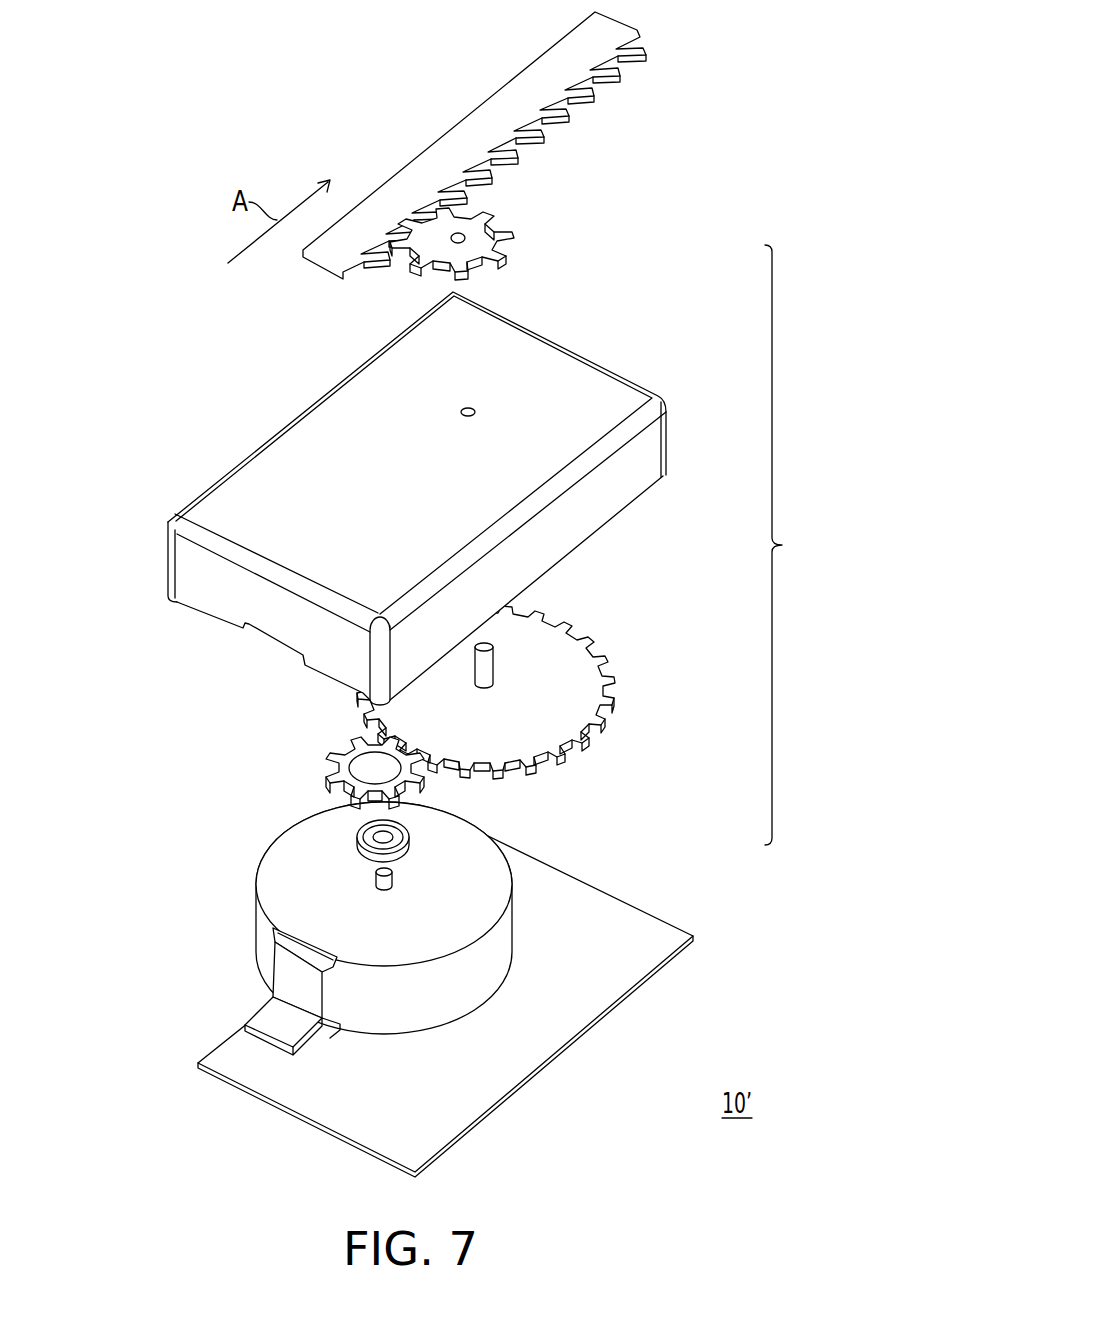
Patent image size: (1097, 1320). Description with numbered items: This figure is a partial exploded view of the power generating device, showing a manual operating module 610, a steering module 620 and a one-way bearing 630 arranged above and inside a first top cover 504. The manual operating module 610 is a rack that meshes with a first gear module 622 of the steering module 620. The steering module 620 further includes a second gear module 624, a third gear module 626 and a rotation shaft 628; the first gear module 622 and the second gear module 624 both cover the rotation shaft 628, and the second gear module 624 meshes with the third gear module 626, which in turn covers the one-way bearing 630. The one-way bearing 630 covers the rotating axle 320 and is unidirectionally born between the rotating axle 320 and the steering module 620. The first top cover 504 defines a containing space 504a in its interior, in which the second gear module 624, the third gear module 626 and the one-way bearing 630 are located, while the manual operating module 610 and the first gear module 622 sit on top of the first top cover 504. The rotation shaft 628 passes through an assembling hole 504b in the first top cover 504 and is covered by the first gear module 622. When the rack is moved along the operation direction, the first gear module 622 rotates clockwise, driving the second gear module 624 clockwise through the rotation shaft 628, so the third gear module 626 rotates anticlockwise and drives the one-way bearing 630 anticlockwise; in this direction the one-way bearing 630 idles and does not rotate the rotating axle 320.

The manual operating module 610 is at (592, 47).
The first gear module 622 is at (486, 237).
The second gear module 624 is at (585, 672).
The third gear module 626 is at (410, 775).
The rotation shaft 628 is at (485, 658).
The one-way bearing 630 is at (366, 832).
The steering module 620 is at (797, 545).
The first top cover 504 is at (296, 460).
The containing space 504a is at (192, 630).
The assembling hole 504b is at (458, 406).
The rotating axle 320 is at (376, 884).